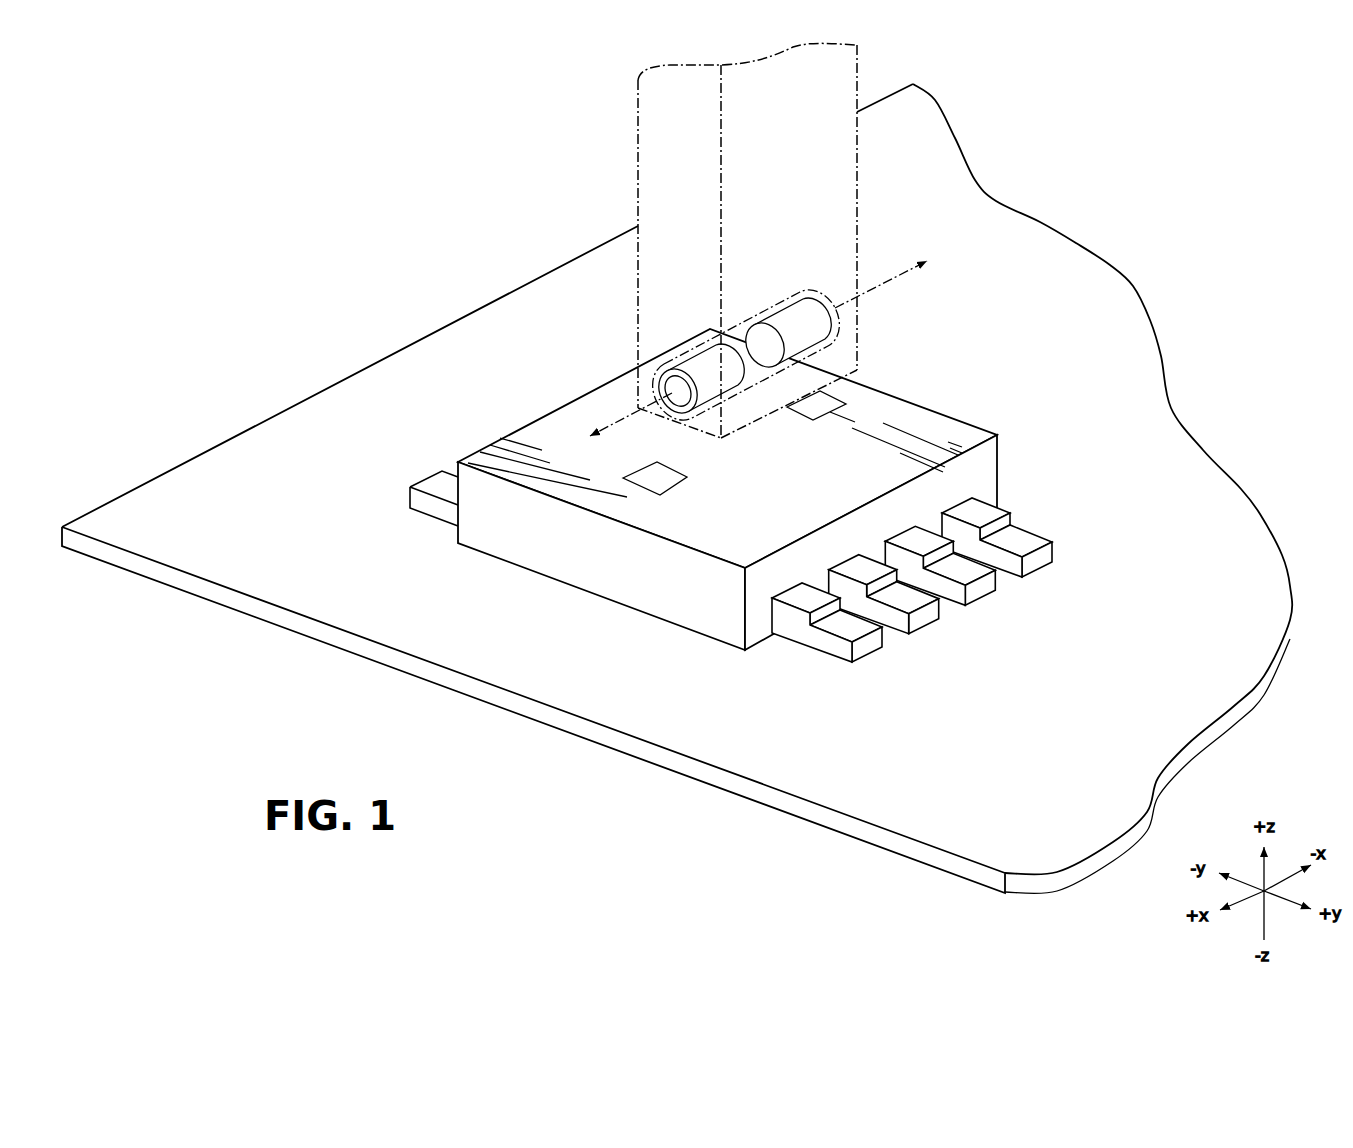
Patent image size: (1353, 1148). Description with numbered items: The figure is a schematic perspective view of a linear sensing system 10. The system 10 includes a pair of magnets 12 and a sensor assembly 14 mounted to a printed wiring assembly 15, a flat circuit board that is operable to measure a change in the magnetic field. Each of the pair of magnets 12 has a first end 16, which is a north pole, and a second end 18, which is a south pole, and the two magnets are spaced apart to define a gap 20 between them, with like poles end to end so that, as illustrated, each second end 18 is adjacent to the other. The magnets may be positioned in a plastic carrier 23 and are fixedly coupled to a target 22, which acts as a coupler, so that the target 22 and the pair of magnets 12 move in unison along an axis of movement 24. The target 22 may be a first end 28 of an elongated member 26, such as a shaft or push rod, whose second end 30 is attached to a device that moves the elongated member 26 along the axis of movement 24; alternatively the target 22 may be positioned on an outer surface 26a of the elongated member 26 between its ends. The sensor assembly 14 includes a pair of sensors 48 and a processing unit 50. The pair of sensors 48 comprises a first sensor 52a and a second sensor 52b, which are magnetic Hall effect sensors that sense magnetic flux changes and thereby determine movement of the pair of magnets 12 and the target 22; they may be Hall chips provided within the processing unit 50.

The system 10 is at (368, 188).
The pair of magnets 12 is at (612, 330).
The sensor assembly 14 is at (532, 591).
The printed wiring assembly 15 is at (773, 748).
The first end 16 is at (723, 372).
The second end 18 is at (723, 368).
The gap 20 is at (739, 350).
The target 22 is at (620, 397).
The carrier 23 is at (693, 352).
The axis of movement 24 is at (893, 282).
The elongated member 26 is at (686, 240).
The outer surface 26a is at (697, 247).
The first end 28 is at (678, 396).
The second end 30 is at (653, 108).
The pair of sensors 48 is at (750, 478).
The processing unit 50 is at (727, 503).
The first sensor 52a is at (655, 480).
The second sensor 52b is at (826, 398).